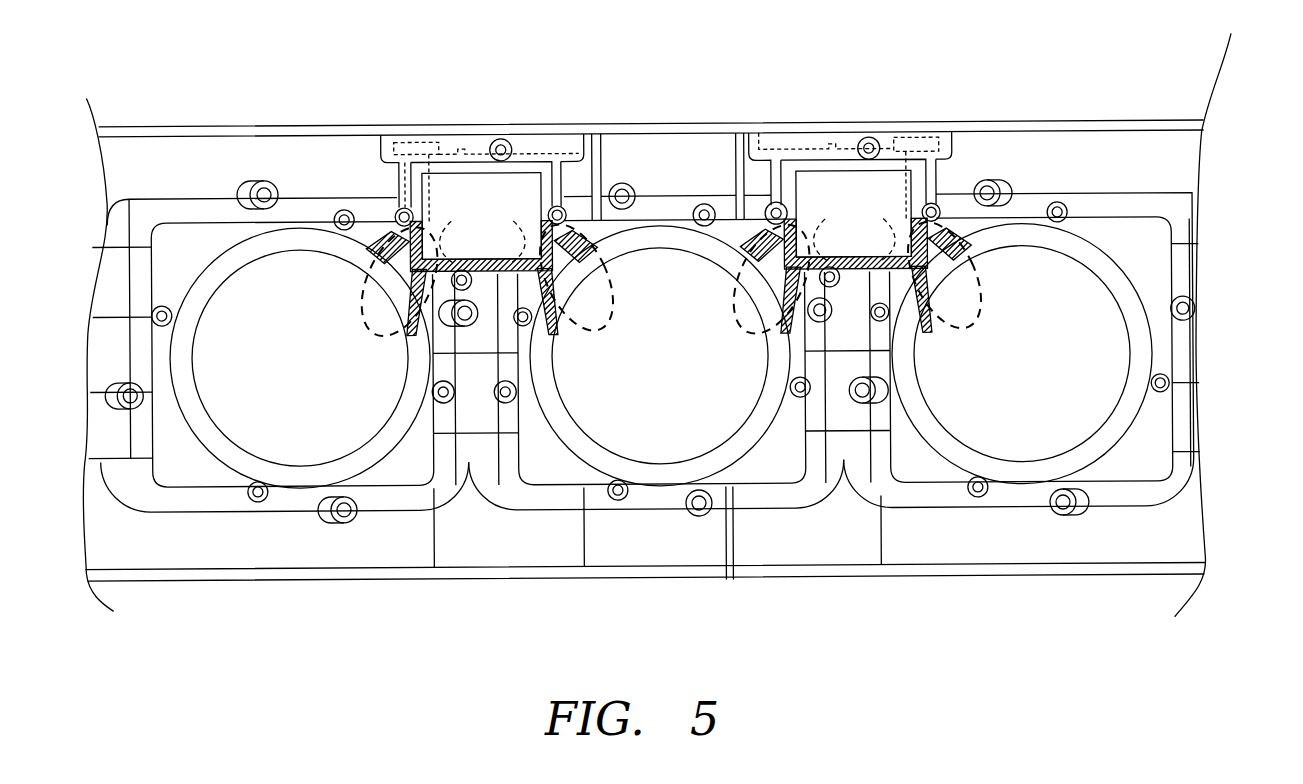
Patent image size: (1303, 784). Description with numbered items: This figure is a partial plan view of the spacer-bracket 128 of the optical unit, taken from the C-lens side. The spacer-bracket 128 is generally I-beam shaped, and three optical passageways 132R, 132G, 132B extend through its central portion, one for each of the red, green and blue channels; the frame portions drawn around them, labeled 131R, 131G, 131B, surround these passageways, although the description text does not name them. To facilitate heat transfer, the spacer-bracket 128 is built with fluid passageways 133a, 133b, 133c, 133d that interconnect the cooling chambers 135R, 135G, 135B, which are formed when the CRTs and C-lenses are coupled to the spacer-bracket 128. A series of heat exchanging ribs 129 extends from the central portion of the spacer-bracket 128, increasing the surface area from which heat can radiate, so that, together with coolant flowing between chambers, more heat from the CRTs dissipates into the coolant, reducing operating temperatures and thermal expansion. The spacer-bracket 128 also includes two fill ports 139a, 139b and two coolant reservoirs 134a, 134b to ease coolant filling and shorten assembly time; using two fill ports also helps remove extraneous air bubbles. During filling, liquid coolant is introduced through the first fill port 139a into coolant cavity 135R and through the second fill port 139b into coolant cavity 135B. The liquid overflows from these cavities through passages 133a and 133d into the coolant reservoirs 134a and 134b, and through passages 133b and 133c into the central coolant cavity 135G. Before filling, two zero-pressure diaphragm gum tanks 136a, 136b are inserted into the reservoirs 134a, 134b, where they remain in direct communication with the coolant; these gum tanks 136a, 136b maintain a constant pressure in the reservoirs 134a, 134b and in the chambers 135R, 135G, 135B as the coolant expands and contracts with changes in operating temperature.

The spacer-bracket 128 is at (1040, 111).
The heat exchanging ribs 129 is at (1199, 250).
The blue lens mounting frame 131B is at (373, 411).
The green lens mounting frame 131G is at (737, 413).
The red lens mounting frame 131R is at (1097, 408).
The optical passageway 132B is at (305, 442).
The optical passageway 132G is at (666, 440).
The optical passageway 132R is at (1021, 442).
The fluid passageway 133a is at (928, 282).
The fluid passageway 133b is at (745, 294).
The fluid passageway 133c is at (560, 289).
The fluid passageway 133d is at (408, 288).
The coolant reservoir 134a is at (722, 141).
The coolant reservoir 134b is at (364, 141).
The cooling chamber 135B is at (232, 410).
The cooling chamber 135G is at (598, 422).
The cooling chamber 135R is at (988, 422).
The zero-pressure diaphragm gum tank 136a is at (852, 189).
The zero-pressure diaphragm gum tank 136b is at (478, 186).
The fill port 139a is at (918, 145).
The fill port 139b is at (416, 145).